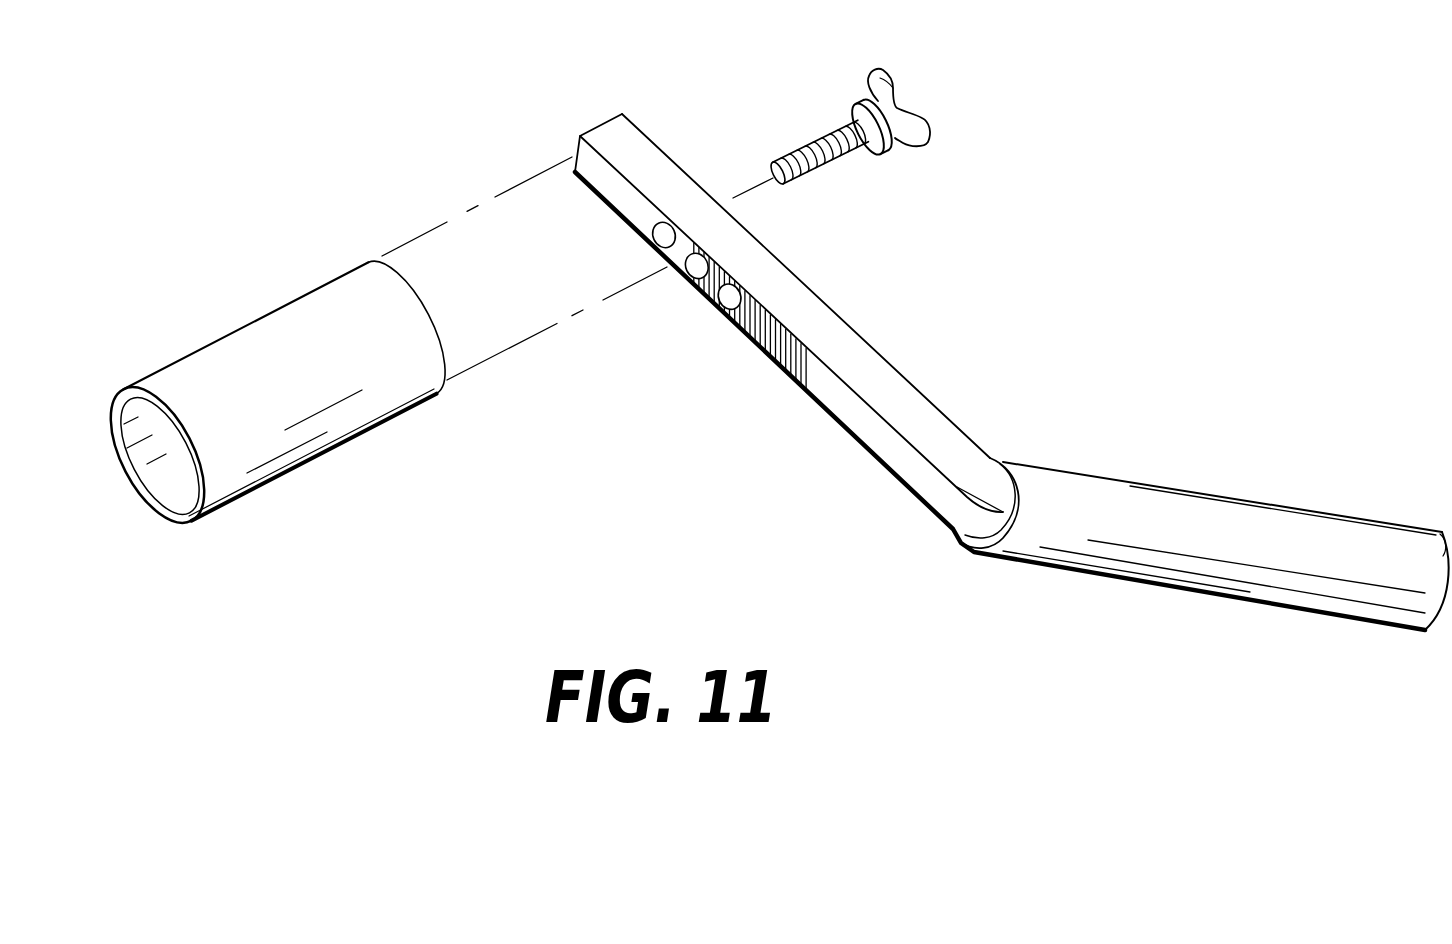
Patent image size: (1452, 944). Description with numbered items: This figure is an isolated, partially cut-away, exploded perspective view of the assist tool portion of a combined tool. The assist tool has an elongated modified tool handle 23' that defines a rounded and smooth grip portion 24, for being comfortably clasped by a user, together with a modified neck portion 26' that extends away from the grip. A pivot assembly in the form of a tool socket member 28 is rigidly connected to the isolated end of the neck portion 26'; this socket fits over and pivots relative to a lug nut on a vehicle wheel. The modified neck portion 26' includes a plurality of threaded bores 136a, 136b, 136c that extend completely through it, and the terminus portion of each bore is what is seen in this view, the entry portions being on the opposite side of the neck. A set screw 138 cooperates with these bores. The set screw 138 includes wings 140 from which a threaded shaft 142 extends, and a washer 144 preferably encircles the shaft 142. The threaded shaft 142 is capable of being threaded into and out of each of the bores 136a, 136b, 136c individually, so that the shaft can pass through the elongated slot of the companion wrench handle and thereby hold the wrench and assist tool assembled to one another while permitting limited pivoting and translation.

The tool socket member 28 is at (228, 332).
The modified neck portion 26' is at (979, 372).
The threaded bore 136a is at (653, 247).
The threaded bore 136b is at (669, 272).
The threaded bore 136c is at (714, 306).
The set screw 138 is at (799, 102).
The threaded shaft 142 is at (810, 143).
The wings 140 is at (880, 70).
The washer 144 is at (880, 148).
The modified tool handle 23' is at (1043, 462).
The grip portion 24 is at (1364, 515).